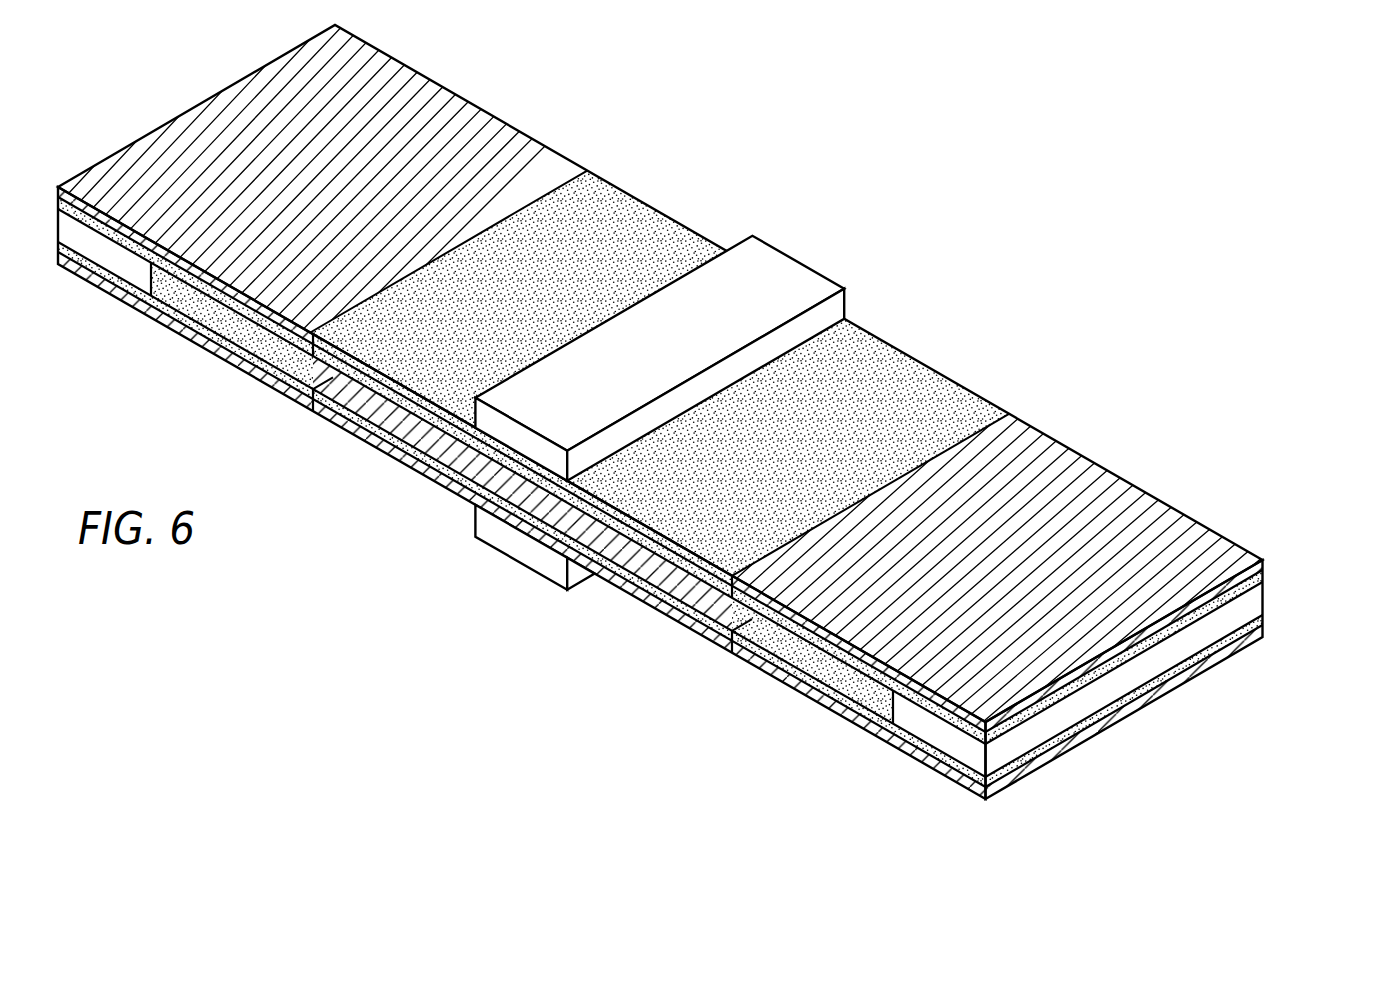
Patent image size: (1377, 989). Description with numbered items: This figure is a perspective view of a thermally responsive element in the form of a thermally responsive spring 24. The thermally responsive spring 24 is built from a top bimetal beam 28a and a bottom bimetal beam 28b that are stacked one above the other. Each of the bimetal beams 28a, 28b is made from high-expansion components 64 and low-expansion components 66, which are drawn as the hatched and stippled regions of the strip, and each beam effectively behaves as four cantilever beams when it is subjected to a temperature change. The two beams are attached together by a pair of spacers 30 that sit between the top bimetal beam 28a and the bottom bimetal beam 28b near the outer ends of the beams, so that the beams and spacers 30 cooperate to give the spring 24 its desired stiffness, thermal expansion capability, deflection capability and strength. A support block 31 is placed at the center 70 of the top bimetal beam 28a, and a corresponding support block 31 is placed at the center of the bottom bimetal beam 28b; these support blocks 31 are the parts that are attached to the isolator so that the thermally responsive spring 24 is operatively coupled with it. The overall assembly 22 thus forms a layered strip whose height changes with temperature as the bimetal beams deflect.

The test strip 22 is at (719, 188).
The thermally responsive spring 24 is at (1013, 423).
The top bimetal beam 28a is at (1010, 710).
The bottom bimetal beam 28b is at (1239, 643).
The spacer 30 is at (100, 250).
The support block 31 is at (795, 283).
The high-expansion component 64 is at (905, 397).
The low-expansion component 66 is at (500, 157).
The center of the top bimetal beam 70 is at (860, 323).